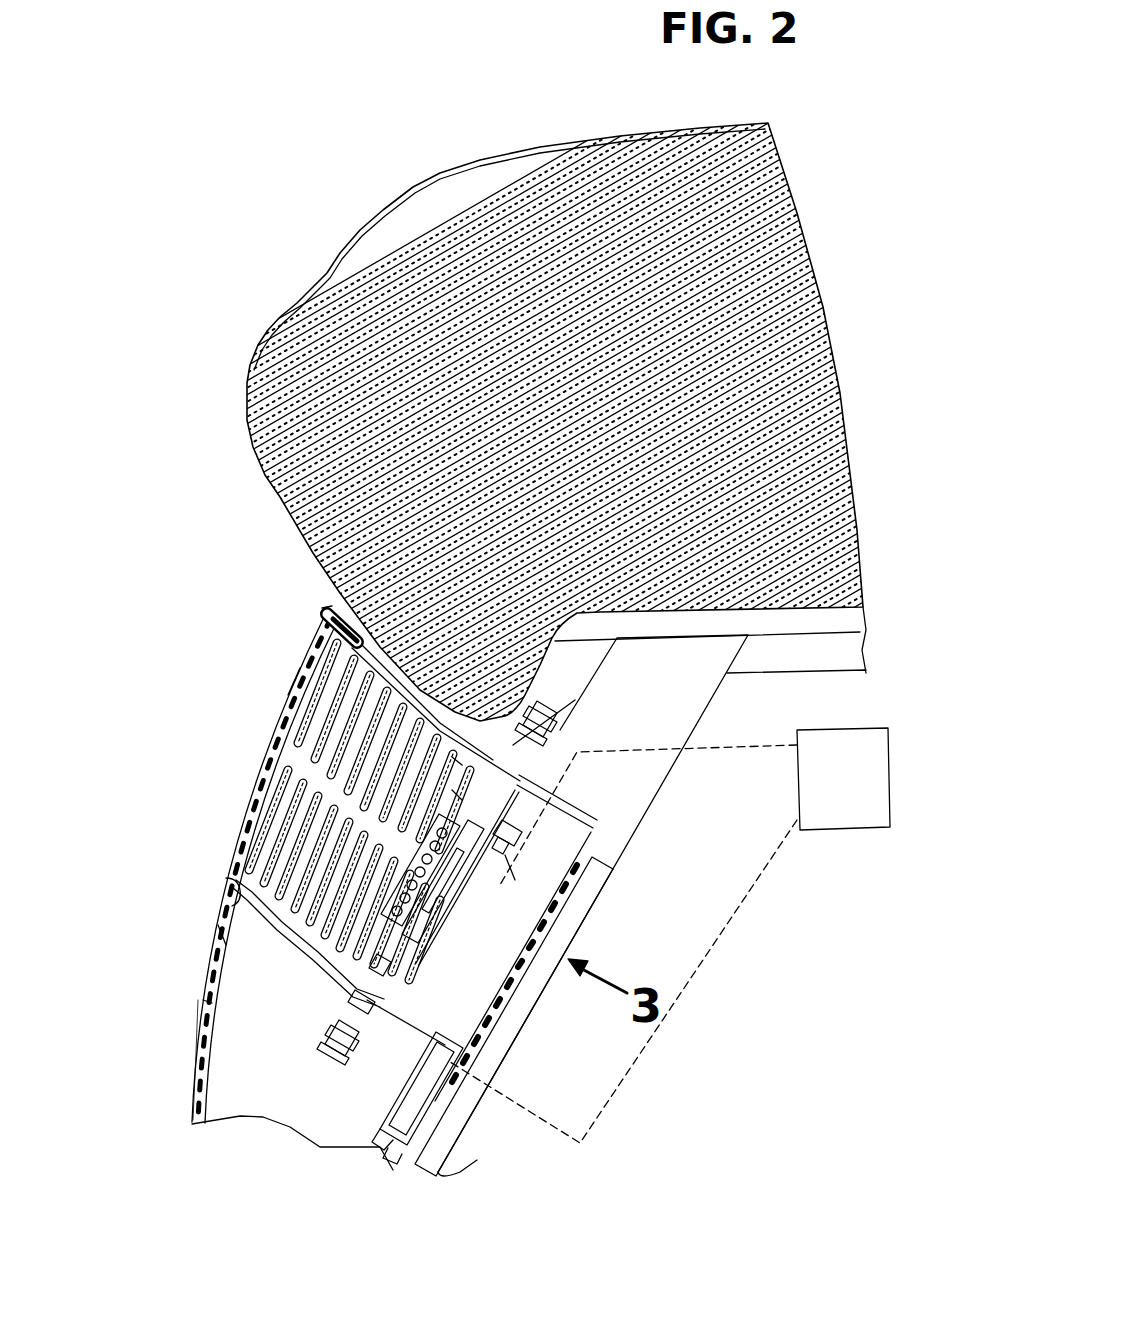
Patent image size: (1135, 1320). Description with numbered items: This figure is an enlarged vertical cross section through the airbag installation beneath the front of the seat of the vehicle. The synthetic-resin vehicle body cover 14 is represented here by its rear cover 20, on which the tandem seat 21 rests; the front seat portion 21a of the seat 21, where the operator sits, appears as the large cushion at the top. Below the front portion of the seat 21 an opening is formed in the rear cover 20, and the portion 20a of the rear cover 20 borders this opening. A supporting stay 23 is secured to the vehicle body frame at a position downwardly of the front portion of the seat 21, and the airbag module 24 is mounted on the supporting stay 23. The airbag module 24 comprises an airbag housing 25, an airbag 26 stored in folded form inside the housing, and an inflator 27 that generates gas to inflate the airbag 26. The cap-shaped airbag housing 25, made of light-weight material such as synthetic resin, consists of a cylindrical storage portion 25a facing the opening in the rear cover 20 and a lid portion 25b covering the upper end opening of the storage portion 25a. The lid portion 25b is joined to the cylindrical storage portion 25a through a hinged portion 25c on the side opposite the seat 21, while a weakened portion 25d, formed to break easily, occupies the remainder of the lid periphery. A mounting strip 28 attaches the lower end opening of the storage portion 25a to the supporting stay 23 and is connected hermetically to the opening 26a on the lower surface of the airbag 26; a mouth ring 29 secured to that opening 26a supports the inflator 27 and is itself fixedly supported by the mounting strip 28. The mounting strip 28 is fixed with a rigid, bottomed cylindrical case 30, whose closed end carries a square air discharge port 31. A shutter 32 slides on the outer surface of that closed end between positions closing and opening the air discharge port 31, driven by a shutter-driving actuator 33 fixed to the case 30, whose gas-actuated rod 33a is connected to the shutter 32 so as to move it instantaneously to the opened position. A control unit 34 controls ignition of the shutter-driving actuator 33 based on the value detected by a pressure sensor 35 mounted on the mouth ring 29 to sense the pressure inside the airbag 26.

The vehicle body cover 14 is at (207, 1002).
The rear cover 20 is at (247, 1005).
The end portion of panel member 20a is at (230, 887).
The tandem seat 21 is at (548, 135).
The front seat portion 21a is at (487, 185).
The supporting stay 23 is at (637, 810).
The airbag module 24 is at (272, 950).
The airbag housing 25 is at (298, 810).
The cylindrical storage portion 25a is at (455, 760).
The lid portion 25b is at (287, 697).
The hinged portion 25c is at (222, 935).
The weakened portion 25d is at (323, 618).
The airbag 26 is at (315, 675).
The opening 26a is at (458, 795).
The inflator 27 is at (420, 890).
The mounting strip 28 is at (357, 997).
The mouth ring 29 is at (395, 965).
The case 30 is at (573, 817).
The air discharge port 31 is at (503, 1010).
The shutter 32 is at (537, 997).
The shutter-driving actuator 33 is at (427, 1090).
The rod 33a is at (383, 1152).
The control unit 34 is at (870, 822).
The pressure sensor 35 is at (507, 842).